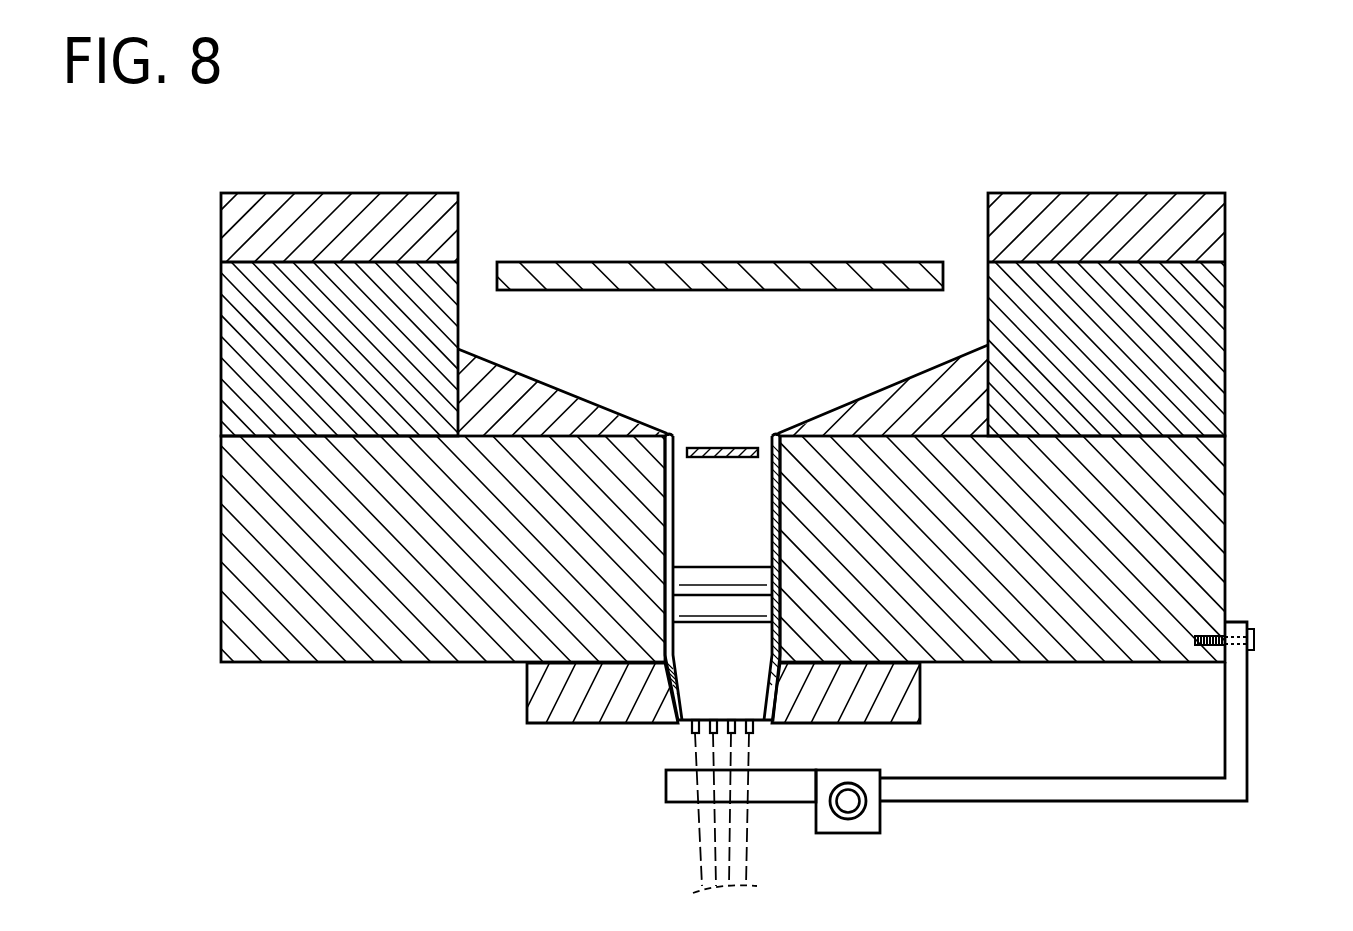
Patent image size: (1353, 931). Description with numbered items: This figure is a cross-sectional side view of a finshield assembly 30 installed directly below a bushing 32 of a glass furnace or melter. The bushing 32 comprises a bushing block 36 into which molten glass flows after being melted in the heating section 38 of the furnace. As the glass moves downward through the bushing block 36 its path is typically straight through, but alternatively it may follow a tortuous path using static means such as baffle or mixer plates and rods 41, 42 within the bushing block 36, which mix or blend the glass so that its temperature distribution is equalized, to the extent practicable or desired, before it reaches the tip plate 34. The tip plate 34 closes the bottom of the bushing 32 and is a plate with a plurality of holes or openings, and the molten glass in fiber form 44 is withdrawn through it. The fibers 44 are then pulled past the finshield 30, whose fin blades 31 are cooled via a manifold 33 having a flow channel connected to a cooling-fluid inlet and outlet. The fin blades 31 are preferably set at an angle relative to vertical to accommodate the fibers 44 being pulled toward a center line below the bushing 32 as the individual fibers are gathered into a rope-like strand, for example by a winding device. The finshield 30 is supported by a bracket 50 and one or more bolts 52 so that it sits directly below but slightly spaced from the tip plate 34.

The finshield assembly 30 is at (934, 736).
The fin blades 31 is at (677, 785).
The bushing 32 is at (777, 635).
The manifold 33 is at (873, 817).
The tip plate 34 is at (693, 728).
The bushing block 36 is at (611, 382).
The heating section 38 is at (718, 260).
The baffle or mixer plate 41 is at (726, 447).
The mixer rods 42 is at (731, 568).
The fibers 44 is at (700, 838).
The bracket 50 is at (1122, 800).
The bolts 52 is at (1251, 638).